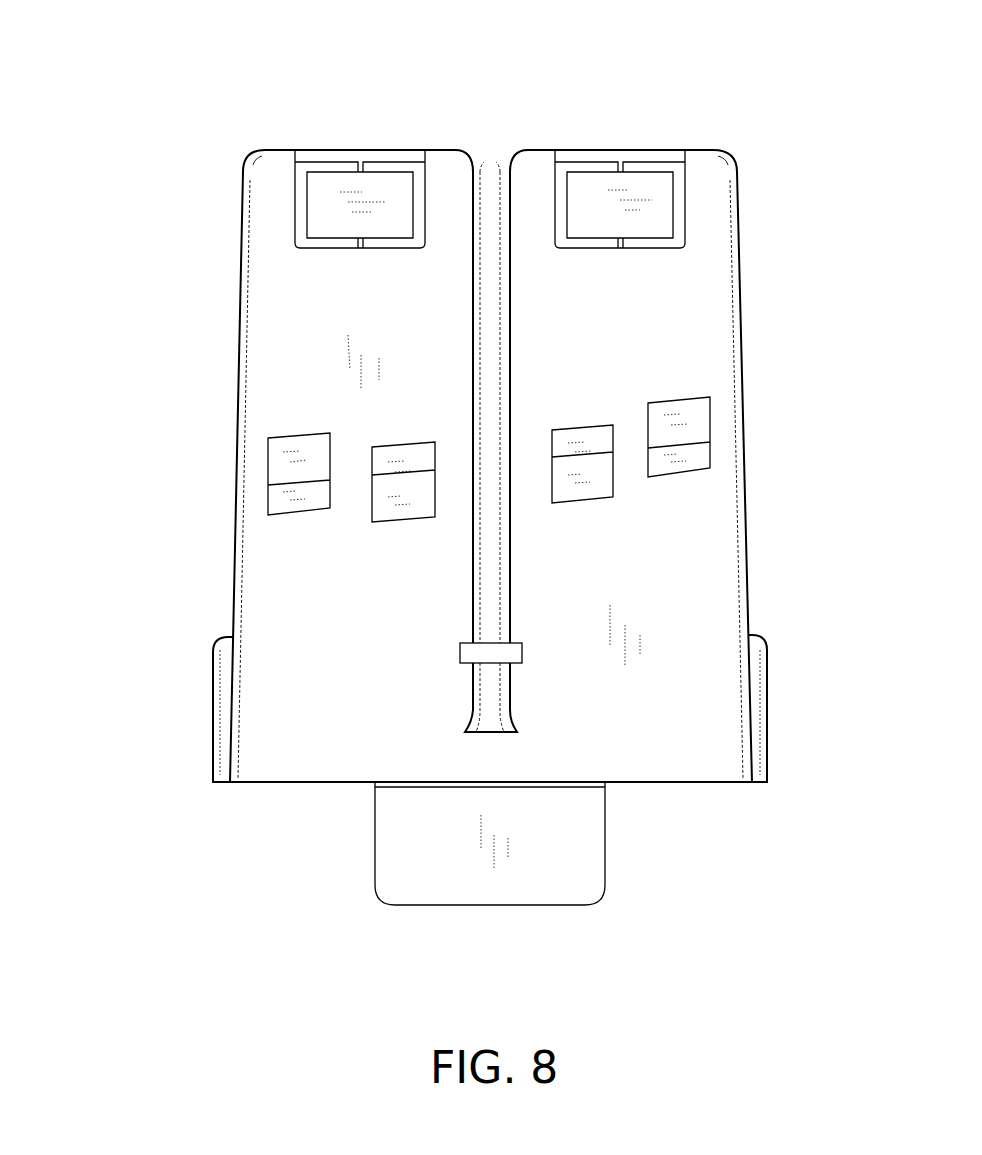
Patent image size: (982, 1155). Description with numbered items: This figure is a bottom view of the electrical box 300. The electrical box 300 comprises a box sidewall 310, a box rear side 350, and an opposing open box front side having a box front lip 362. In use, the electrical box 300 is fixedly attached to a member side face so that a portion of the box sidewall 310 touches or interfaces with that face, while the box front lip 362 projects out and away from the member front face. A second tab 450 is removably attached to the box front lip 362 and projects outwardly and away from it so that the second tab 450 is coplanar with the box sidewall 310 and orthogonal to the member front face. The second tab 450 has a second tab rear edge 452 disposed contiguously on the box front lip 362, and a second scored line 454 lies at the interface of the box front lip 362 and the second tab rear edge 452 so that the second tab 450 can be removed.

The electrical box 300 is at (196, 127).
The box sidewall 310 is at (747, 538).
The box rear side 350 is at (570, 150).
The box front lip 362 is at (233, 783).
The second tab 450 is at (583, 841).
The second tab rear edge 452 is at (408, 785).
The second scored line 454 is at (457, 782).